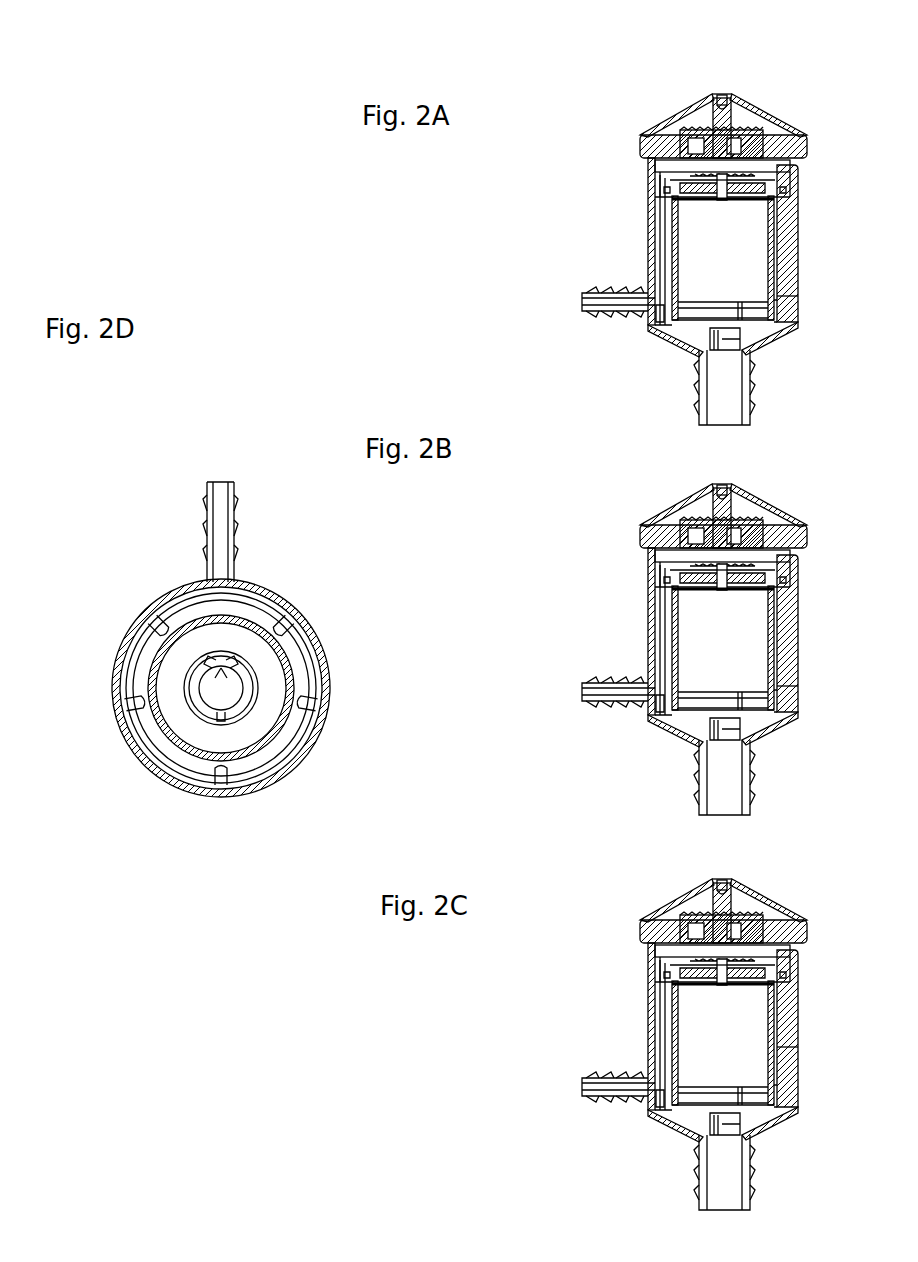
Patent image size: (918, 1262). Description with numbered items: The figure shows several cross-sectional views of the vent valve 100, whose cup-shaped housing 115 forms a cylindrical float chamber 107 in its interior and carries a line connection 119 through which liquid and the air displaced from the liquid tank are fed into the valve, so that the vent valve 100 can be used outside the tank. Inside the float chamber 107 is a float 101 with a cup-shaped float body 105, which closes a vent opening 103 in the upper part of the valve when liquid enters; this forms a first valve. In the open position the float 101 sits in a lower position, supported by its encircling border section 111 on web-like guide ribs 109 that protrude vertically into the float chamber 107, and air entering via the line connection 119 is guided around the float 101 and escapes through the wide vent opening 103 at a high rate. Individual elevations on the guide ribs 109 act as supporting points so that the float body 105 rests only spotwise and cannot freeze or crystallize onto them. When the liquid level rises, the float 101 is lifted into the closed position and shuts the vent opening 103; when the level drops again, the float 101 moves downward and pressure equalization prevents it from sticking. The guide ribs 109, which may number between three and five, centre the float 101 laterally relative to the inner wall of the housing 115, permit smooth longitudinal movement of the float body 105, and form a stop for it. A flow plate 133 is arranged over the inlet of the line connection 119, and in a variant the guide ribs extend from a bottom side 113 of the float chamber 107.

In FIG. 2A, the vent valve 100 is at (582, 188).
In FIG. 2B, the vent valve 100 is at (533, 526).
In FIG. 2C, the vent valve 100 is at (533, 925).
In FIG. 2D, the vent valve 100 is at (158, 546).
In FIG. 2A, the float 101 is at (677, 242).
In FIG. 2B, the float 101 is at (651, 648).
In FIG. 2C, the float 101 is at (651, 1043).
In FIG. 2D, the float 101 is at (262, 742).
In FIG. 2A, the vent opening 103 is at (695, 128).
In FIG. 2B, the vent opening 103 is at (723, 484).
In FIG. 2C, the vent opening 103 is at (723, 878).
In FIG. 2A, the float body 105 is at (757, 343).
In FIG. 2B, the float body 105 is at (770, 728).
In FIG. 2C, the float body 105 is at (770, 1123).
In FIG. 2A, the float chamber 107 is at (663, 182).
In FIG. 2B, the float chamber 107 is at (691, 599).
In FIG. 2C, the float chamber 107 is at (691, 994).
In FIG. 2D, the float chamber 107 is at (302, 650).
In FIG. 2A, the guide ribs 109 is at (787, 300).
In FIG. 2B, the guide ribs 109 is at (711, 690).
In FIG. 2C, the guide ribs 109 is at (711, 1054).
In FIG. 2D, the guide ribs 109 is at (150, 600).
In FIG. 2A, the encircling border section 111 is at (790, 197).
In FIG. 2B, the encircling border section 111 is at (722, 570).
In FIG. 2C, the encircling border section 111 is at (722, 965).
In FIG. 2A, the bottom side 113 is at (757, 350).
In FIG. 2C, the bottom side 113 is at (694, 1126).
In FIG. 2A, the housing 115 is at (648, 266).
In FIG. 2B, the housing 115 is at (618, 692).
In FIG. 2C, the housing 115 is at (618, 1087).
In FIG. 2D, the housing 115 is at (307, 745).
In FIG. 2A, the line connection 119 is at (697, 375).
In FIG. 2B, the line connection 119 is at (724, 777).
In FIG. 2C, the line connection 119 is at (724, 1172).
In FIG. 2B, the flow plate 133 is at (732, 768).
In FIG. 2D, the flow plate 133 is at (218, 690).